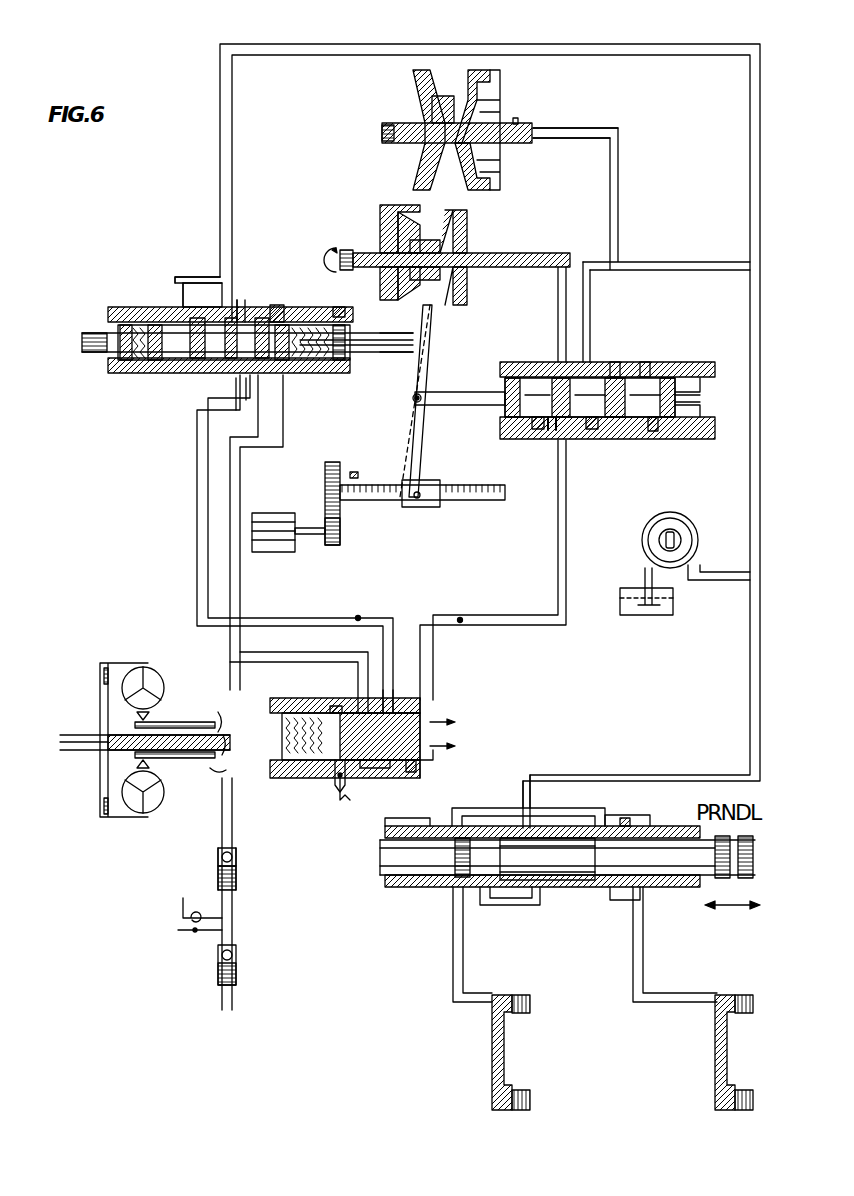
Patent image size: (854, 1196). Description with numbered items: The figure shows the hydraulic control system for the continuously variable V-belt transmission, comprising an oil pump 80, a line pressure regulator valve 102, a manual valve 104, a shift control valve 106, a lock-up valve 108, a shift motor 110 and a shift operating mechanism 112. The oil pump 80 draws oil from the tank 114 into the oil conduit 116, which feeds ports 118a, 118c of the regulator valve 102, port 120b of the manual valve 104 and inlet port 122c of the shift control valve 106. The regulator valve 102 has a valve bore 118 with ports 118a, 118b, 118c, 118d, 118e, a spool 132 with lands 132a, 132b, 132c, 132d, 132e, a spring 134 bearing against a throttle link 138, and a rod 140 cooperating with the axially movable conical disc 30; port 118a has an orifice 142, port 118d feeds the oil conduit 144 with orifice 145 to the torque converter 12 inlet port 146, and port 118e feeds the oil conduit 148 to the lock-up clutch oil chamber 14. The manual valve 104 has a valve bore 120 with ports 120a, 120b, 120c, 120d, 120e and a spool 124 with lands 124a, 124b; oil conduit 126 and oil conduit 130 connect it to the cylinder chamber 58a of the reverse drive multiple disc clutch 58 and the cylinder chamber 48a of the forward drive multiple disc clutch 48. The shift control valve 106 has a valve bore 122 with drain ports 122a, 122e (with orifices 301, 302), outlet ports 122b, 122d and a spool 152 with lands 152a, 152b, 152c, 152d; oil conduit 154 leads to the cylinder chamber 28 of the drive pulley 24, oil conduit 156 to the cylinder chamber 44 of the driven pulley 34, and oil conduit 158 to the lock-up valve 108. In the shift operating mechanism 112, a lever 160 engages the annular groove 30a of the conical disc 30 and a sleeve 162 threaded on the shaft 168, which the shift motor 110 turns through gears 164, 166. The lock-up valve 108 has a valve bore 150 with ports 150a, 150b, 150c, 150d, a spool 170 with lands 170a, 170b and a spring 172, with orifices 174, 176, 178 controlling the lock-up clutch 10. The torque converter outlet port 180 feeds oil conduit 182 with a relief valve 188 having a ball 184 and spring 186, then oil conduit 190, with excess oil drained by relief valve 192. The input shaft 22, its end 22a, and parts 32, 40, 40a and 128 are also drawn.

The lock-up clutch 10 is at (105, 690).
The torque converter 12 is at (98, 783).
The lock-up clutch oil chamber 14 is at (100, 712).
The input shaft 22 is at (488, 253).
The input shaft end 22a is at (348, 248).
The drive pulley 24 is at (372, 222).
The cylinder chamber of the drive pulley 28 is at (398, 292).
The axially movable conical disc 30 is at (430, 302).
The annular groove 30a is at (420, 205).
The driven pulley fixed sheave 32 is at (438, 96).
The driven pulley 34 is at (478, 62).
The driven shaft 40 is at (397, 123).
The driven shaft passage 40a is at (520, 118).
The cylinder chamber of the driven pulley 44 is at (492, 95).
The forward drive multiple disc clutch 48 is at (738, 997).
The cylinder chamber of the forward drive multiple disc clutch 48a is at (716, 995).
The reverse drive multiple disc clutch 58 is at (532, 1010).
The cylinder chamber of the reverse drive multiple disc clutch 58a is at (494, 995).
The oil pump 80 is at (642, 545).
The line pressure regulator valve 102 is at (240, 300).
The manual valve 104 is at (672, 808).
The shift control valve 106 is at (570, 440).
The lock-up valve 108 is at (372, 785).
The shift motor 110 is at (268, 512).
The shift operating mechanism 112 is at (422, 444).
The tank 114 is at (673, 615).
The oil conduit 116 is at (742, 525).
The valve bore 118 is at (226, 375).
The port 118a is at (180, 307).
The port 118b is at (208, 305).
The port 118c is at (240, 298).
The port 118d is at (268, 305).
The port 118e is at (338, 305).
The valve bore 120 is at (485, 887).
The port 120a is at (385, 830).
The port 120b is at (530, 838).
The port 120c is at (560, 900).
The port 120d is at (630, 838).
The port 120e is at (645, 900).
The valve bore 122 is at (672, 417).
The first drain port 122a is at (536, 430).
The first outlet port 122b is at (552, 432).
The inlet port 122c is at (590, 430).
The second outlet port 122d is at (615, 362).
The second drain port 122e is at (645, 362).
The spool 124 is at (380, 872).
The land 124a is at (456, 880).
The land 124b is at (586, 880).
The oil conduit 126 is at (520, 808).
The forward clutch passage 128 is at (453, 960).
The oil conduit 130 is at (633, 982).
The spool 132 is at (175, 352).
The land 132a is at (140, 360).
The land 132b is at (200, 362).
The land 132c is at (255, 362).
The land 132d is at (268, 362).
The land 132e is at (285, 362).
The spring 134 is at (140, 325).
The throttle link 138 is at (88, 325).
The rod 140 is at (380, 352).
The orifice 142 is at (178, 278).
The oil conduit 144 is at (197, 498).
The orifice 145 is at (214, 403).
The inlet port of the torque converter 146 is at (172, 722).
The oil conduit 148 is at (240, 462).
The valve bore 150 is at (284, 760).
The port 150a is at (334, 706).
The port 150b is at (378, 768).
The port 150c is at (393, 680).
The port 150d is at (416, 766).
The spool 152 is at (528, 378).
The first endmost land 152a is at (506, 378).
The first control land 152b is at (558, 362).
The second control land 152c is at (615, 440).
The second endmost land 152d is at (675, 378).
The oil conduit 154 is at (562, 262).
The oil conduit 156 is at (618, 195).
The oil conduit 158 is at (566, 522).
The lever 160 is at (412, 400).
The sleeve 162 is at (422, 507).
The gear 164 is at (340, 525).
The gear 166 is at (325, 468).
The shaft 168 is at (382, 485).
The spool 170 is at (352, 712).
The land 170a is at (338, 778).
The land 170b is at (432, 768).
The spring 172 is at (280, 718).
The orifice 174 is at (360, 615).
The orifice 176 is at (462, 615).
The orifice 178 is at (342, 785).
The torque converter outlet port 180 is at (205, 758).
The oil conduit 182 is at (232, 826).
The ball 184 is at (236, 856).
The spring 186 is at (236, 886).
The relief valve 188 is at (208, 870).
The oil conduit 190 is at (183, 898).
The relief valve 192 is at (242, 983).
The orifice 301 is at (358, 474).
The orifice 302 is at (656, 432).